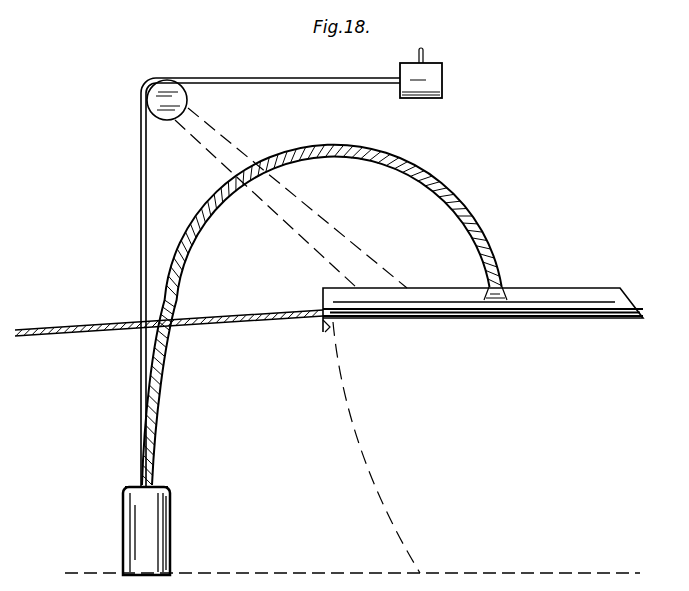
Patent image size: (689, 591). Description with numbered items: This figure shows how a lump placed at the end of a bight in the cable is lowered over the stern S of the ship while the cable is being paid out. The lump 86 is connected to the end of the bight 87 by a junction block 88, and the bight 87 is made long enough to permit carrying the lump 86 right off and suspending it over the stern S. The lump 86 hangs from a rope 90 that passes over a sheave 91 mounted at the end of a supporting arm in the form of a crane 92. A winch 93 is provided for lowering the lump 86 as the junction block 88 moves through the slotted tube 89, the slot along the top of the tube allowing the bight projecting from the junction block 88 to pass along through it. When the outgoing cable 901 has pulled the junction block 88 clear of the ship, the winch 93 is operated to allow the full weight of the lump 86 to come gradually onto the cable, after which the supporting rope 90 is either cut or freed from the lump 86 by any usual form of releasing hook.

The lump 86 is at (161, 531).
The bight 87 is at (322, 303).
The junction block 88 is at (522, 316).
The slotted tube 89 is at (551, 300).
The rope 90 is at (141, 198).
The outgoing cable 901 is at (95, 327).
The sheave 91 is at (158, 99).
The crane 92 is at (291, 198).
The winch 93 is at (427, 70).
The stern S is at (376, 447).